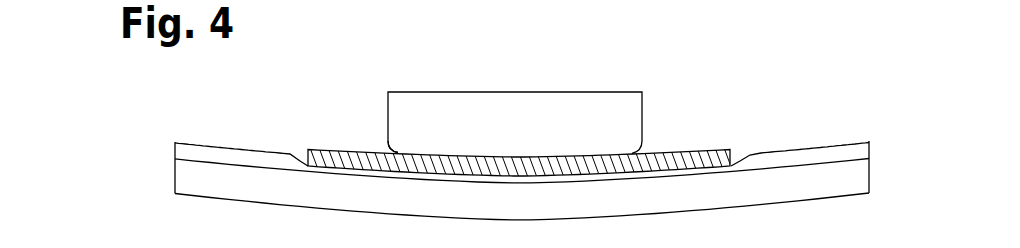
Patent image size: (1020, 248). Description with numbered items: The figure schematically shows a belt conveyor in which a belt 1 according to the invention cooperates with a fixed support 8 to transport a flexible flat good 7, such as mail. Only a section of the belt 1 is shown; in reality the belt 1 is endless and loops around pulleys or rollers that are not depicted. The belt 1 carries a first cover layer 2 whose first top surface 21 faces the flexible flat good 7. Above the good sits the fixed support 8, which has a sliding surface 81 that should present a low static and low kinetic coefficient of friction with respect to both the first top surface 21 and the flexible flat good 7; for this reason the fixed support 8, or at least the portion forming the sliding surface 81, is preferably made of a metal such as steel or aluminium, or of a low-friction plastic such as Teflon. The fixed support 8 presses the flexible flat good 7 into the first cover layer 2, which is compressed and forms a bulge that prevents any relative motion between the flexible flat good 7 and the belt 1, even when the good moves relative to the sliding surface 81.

The belt 1 is at (138, 175).
The first cover layer 2 is at (183, 150).
The first top surface 21 is at (244, 144).
The flexible flat good 7 is at (731, 149).
The fixed support 8 is at (510, 110).
The sliding surface 81 is at (402, 140).